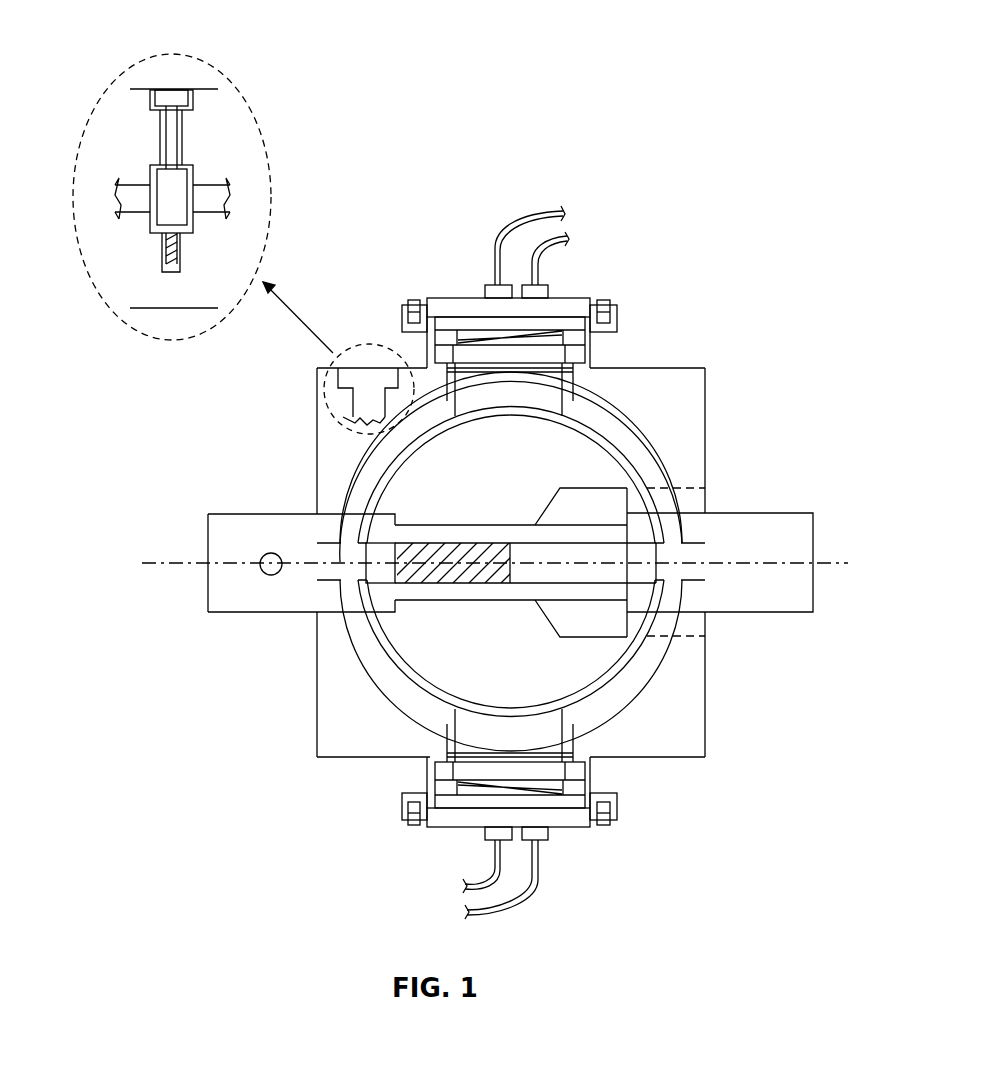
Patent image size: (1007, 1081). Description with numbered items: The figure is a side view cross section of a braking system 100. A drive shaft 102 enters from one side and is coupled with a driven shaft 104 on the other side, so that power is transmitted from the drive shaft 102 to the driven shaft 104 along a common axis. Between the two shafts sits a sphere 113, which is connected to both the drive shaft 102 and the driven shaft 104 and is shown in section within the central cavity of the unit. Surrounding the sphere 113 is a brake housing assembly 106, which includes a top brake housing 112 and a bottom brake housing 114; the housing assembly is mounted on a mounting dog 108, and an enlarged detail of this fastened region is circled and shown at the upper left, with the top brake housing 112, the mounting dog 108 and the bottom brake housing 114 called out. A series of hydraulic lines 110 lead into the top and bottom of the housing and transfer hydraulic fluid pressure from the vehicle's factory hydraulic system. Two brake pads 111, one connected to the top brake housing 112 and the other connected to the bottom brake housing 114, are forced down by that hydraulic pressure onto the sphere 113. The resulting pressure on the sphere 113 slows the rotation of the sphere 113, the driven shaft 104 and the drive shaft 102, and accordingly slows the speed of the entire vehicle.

The braking system 100 is at (625, 173).
The drive shaft 102 is at (775, 520).
The driven shaft 104 is at (218, 580).
The brake housing assembly 106 is at (692, 420).
The mounting dog 108 is at (182, 183).
The hydraulic lines 110 is at (525, 215).
The brake pads 111 is at (628, 467).
The top brake housing 112 is at (180, 89).
The sphere 113 is at (440, 478).
The bottom brake housing 114 is at (172, 308).